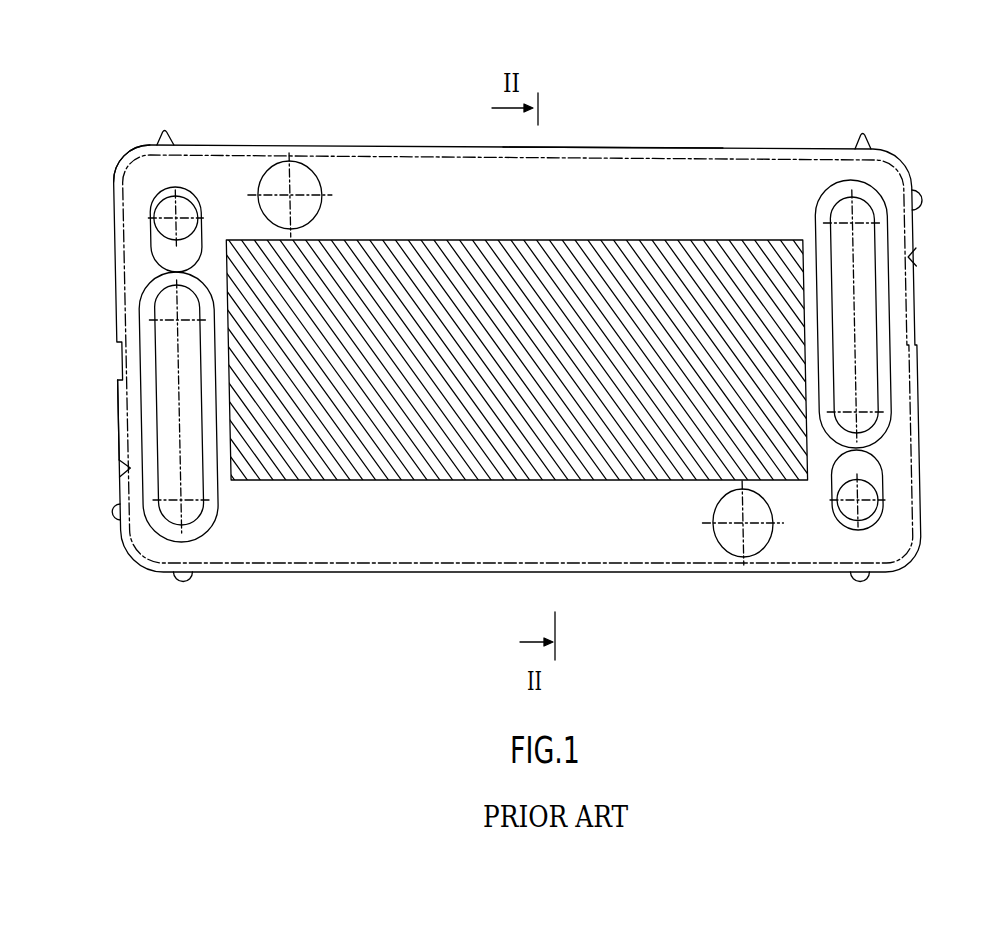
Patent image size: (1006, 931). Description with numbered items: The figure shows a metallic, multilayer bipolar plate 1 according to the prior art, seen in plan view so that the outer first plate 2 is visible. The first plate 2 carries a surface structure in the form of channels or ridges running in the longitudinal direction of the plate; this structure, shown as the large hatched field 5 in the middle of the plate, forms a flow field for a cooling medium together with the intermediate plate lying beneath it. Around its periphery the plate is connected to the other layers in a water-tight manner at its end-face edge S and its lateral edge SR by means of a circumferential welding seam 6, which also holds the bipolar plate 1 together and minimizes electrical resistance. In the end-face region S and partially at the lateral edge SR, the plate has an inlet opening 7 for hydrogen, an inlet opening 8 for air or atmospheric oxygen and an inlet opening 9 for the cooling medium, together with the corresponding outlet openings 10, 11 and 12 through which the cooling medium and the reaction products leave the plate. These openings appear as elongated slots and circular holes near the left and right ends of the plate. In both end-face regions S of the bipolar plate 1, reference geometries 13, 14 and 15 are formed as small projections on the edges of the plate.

The bipolar plate 1 is at (125, 130).
The first plate 2 is at (383, 183).
The heat exchange field 5 is at (340, 463).
The welding seam 6 is at (835, 183).
The inlet opening for hydrogen 7 is at (875, 294).
The inlet opening for air/oxygen 8 is at (879, 518).
The inlet opening for the cooling medium 9 is at (765, 547).
The outlet opening 10 is at (283, 162).
The outlet opening 11 is at (158, 358).
The outlet opening 12 is at (157, 202).
The reference geometry 13 is at (108, 512).
The reference geometry 14 is at (182, 587).
The reference geometry 15 is at (165, 128).
The end-face edge S is at (114, 418).
The lateral edge SR is at (605, 147).